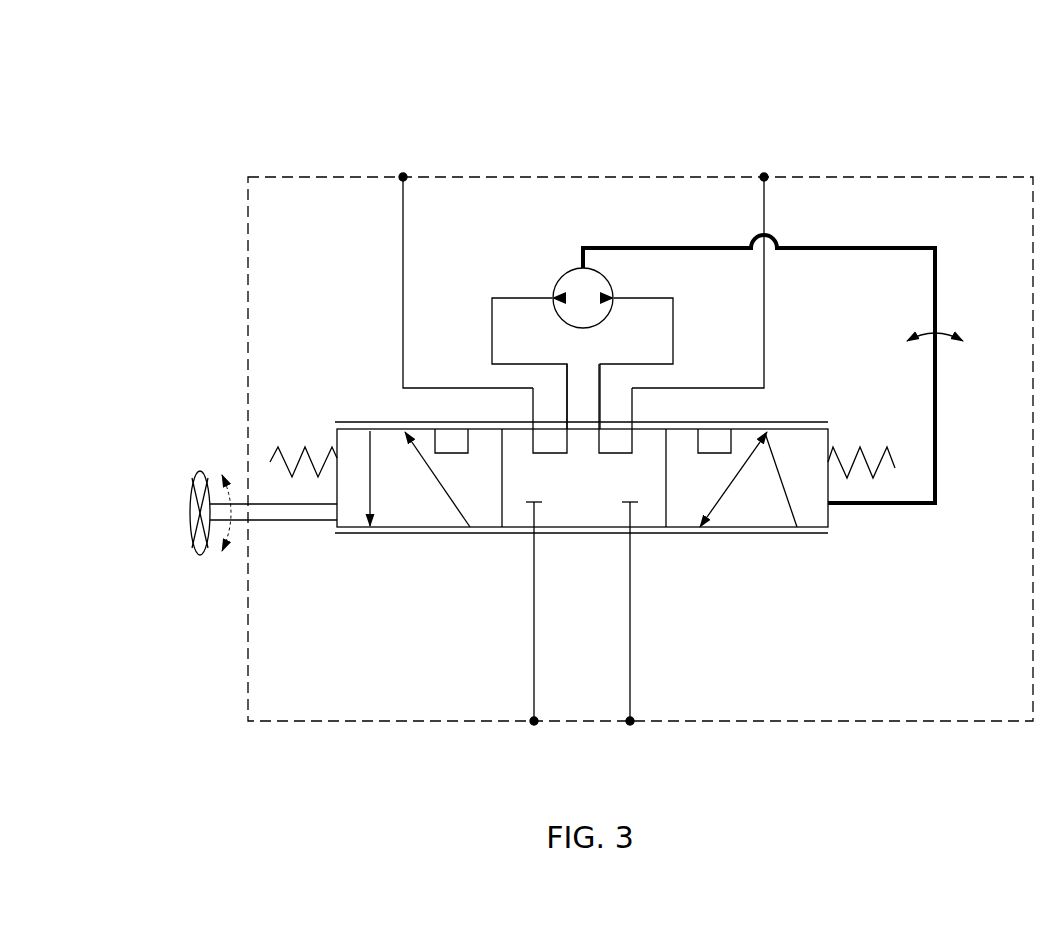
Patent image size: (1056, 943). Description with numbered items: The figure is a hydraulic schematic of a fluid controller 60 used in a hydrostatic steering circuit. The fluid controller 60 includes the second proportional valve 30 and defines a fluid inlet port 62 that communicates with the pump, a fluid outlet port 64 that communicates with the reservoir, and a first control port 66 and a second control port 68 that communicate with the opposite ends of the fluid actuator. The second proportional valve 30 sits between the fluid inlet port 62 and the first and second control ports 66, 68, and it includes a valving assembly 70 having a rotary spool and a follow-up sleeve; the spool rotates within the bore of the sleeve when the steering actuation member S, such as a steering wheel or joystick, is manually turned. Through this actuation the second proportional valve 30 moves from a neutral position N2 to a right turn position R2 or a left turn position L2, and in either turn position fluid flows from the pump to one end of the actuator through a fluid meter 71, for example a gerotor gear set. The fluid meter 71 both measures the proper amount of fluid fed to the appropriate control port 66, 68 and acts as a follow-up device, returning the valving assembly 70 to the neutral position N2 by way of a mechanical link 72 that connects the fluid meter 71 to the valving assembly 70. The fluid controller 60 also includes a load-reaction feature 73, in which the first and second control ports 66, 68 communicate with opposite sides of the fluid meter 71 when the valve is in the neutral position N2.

The fluid controller 60 is at (330, 176).
The valving assembly 70 is at (340, 418).
The second proportional valve 30 is at (808, 425).
The load-reaction feature 73 is at (530, 465).
The steering actuation member S is at (196, 475).
The fluid meter 71 is at (562, 277).
The mechanical link 72 is at (937, 283).
The first control port 66 is at (406, 175).
The second control port 68 is at (767, 175).
The fluid outlet port 64 is at (532, 723).
The fluid inlet port 62 is at (633, 723).
The left turn position L2 is at (423, 537).
The right turn position R2 is at (725, 537).
The neutral position N2 is at (574, 536).